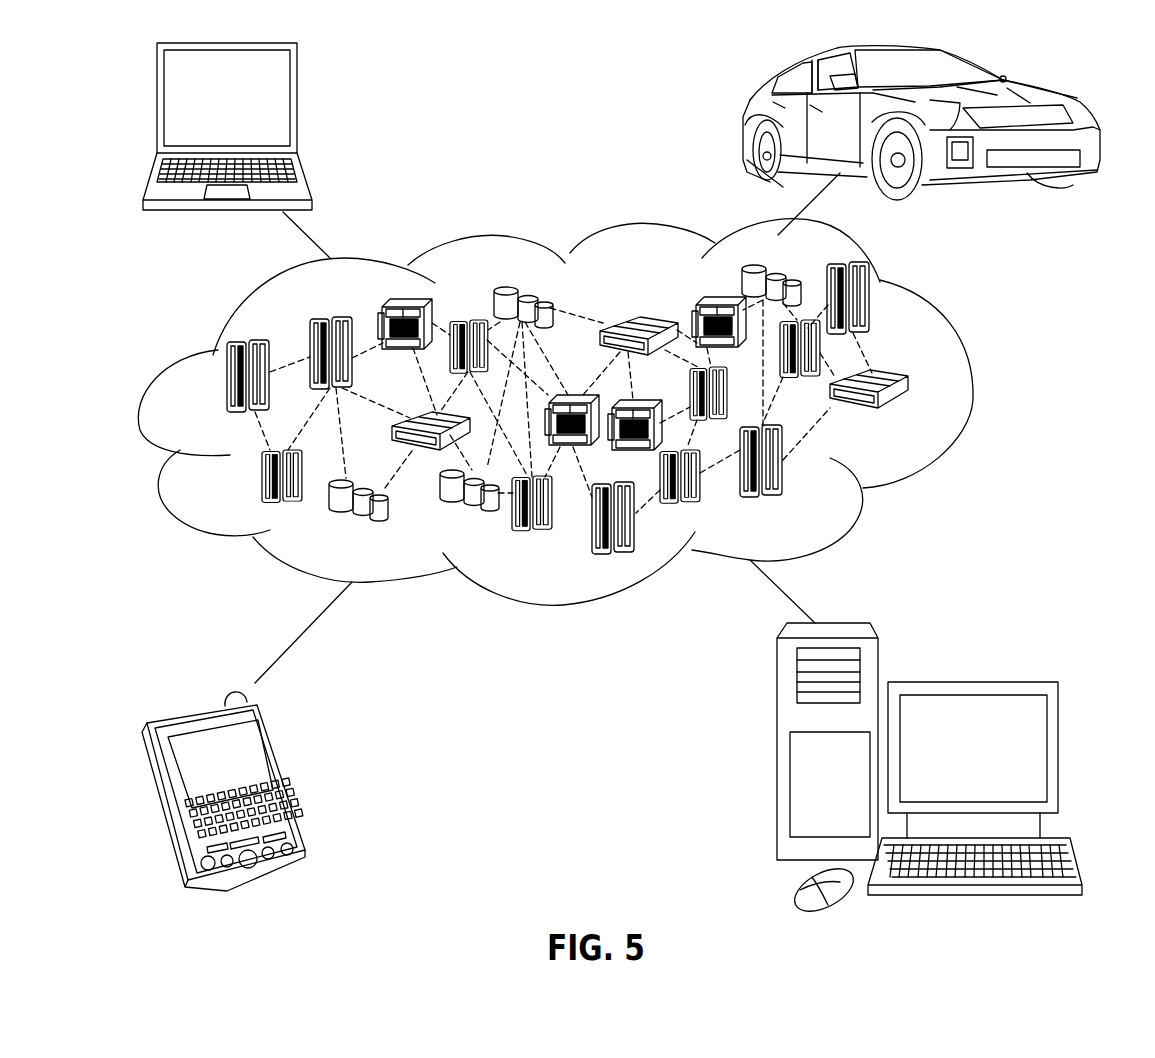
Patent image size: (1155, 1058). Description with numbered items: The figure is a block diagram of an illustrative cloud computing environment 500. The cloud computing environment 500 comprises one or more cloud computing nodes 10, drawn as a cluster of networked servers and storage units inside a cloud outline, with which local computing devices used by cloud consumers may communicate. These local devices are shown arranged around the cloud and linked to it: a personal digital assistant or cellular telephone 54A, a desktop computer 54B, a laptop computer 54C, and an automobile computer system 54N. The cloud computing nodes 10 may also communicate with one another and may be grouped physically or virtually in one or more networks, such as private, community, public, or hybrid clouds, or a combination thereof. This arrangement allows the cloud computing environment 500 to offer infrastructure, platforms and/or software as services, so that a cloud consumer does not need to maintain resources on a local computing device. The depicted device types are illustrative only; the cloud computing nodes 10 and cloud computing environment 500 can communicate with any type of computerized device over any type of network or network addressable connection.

The cloud computing environment 500 is at (968, 386).
The cloud computing nodes 10 is at (911, 417).
The personal digital assistant (PDA) or cellular telephone 54A is at (287, 779).
The desktop computer 54B is at (970, 683).
The laptop computer 54C is at (296, 107).
The automobile computer system 54N is at (745, 122).